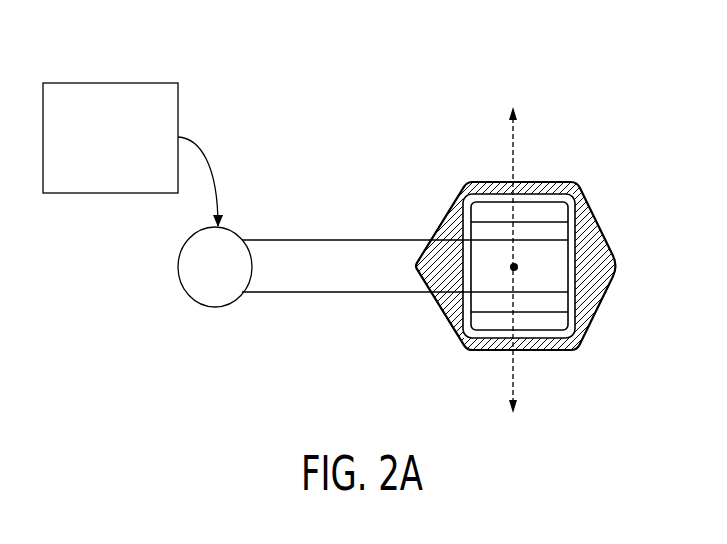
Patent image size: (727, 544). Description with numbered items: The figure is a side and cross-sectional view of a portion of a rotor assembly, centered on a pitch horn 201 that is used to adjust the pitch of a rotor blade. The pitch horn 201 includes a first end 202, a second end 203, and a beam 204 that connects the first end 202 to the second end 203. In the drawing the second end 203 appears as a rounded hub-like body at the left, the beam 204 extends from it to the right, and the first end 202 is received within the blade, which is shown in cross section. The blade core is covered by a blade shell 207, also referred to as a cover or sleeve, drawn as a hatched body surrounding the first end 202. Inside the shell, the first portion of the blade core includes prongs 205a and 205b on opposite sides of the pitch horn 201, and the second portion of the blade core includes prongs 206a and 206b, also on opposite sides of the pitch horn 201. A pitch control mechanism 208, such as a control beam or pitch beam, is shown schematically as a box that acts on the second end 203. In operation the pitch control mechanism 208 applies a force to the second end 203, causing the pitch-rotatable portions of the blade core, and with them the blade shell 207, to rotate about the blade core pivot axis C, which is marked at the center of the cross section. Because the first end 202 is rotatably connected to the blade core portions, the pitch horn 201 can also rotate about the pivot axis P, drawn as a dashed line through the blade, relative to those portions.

The pitch horn 201 is at (336, 208).
The first end 202 is at (567, 265).
The second end 203 is at (205, 288).
The beam 204 is at (320, 277).
The prong 205a is at (560, 232).
The prong 205b is at (556, 298).
The prong 206a is at (553, 212).
The prong 206b is at (556, 320).
The blade shell 207 is at (598, 258).
The pitch control mechanism 208 is at (98, 83).
The blade core pivot axis C is at (517, 265).
The pivot axis P is at (522, 150).